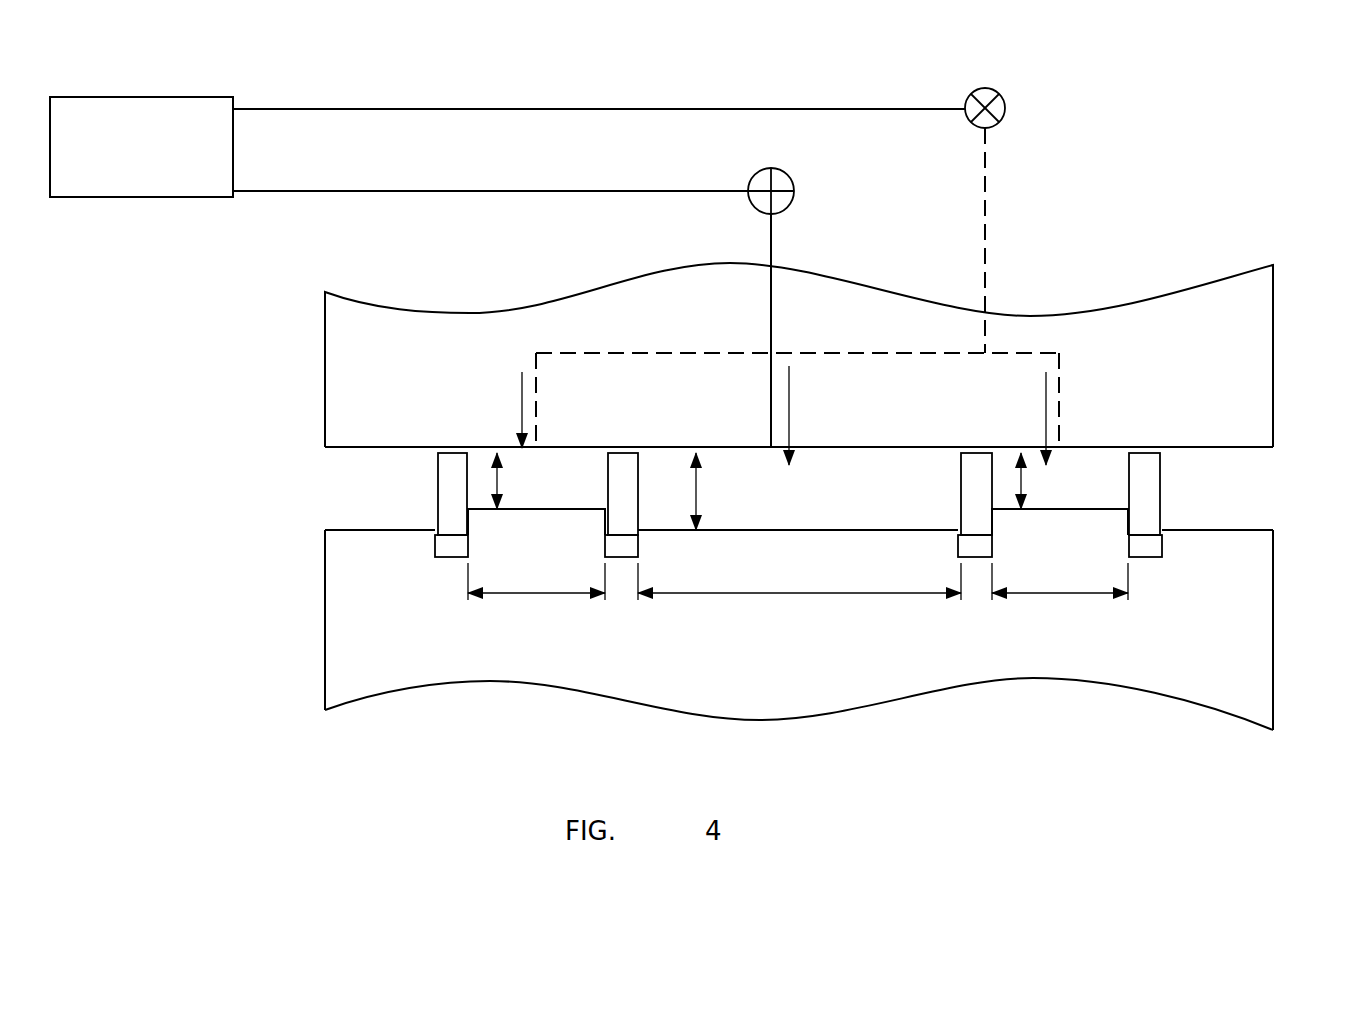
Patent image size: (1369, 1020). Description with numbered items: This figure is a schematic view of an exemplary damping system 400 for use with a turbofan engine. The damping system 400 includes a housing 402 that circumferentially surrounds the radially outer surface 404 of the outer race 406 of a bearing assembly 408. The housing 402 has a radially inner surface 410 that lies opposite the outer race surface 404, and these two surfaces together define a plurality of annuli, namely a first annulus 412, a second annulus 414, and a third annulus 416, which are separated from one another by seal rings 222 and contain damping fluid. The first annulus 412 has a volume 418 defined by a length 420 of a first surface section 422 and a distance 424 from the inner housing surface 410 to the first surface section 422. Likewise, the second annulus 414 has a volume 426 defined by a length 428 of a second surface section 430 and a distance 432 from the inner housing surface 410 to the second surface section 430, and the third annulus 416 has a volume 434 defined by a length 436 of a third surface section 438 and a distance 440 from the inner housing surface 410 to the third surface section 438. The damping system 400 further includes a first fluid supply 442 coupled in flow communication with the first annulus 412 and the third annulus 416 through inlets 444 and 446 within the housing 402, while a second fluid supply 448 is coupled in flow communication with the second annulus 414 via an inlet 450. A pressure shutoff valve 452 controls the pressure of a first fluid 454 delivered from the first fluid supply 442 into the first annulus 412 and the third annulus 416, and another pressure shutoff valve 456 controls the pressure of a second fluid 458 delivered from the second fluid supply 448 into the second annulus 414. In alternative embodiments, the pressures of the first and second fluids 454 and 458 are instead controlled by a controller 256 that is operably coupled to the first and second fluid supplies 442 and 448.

The controller 256 is at (170, 157).
The damping system 400 is at (1203, 168).
The housing 402 is at (1274, 290).
The radially outer surface 404 is at (1262, 534).
The outer race 406 is at (1273, 660).
The bearing assembly 408 is at (1037, 690).
The radially inner surface 410 is at (1262, 450).
The first annulus 412 is at (600, 450).
The second annulus 414 is at (865, 540).
The third annulus 416 is at (1117, 450).
The volume 418 is at (580, 497).
The length 420 is at (528, 597).
The first surface section 422 is at (512, 505).
The distance 424 is at (496, 480).
The volume 426 is at (902, 497).
The length 428 is at (790, 598).
The second surface section 430 is at (758, 530).
The distance 432 is at (697, 490).
The volume 434 is at (1124, 497).
The length 436 is at (1050, 597).
The third surface section 438 is at (1030, 505).
The distance 440 is at (1018, 480).
The first fluid supply 442 is at (1000, 90).
The inlet 444 is at (536, 357).
The inlet 446 is at (1060, 392).
The second fluid supply 448 is at (786, 174).
The inlet 450 is at (773, 250).
The pressure shutoff valve 452 is at (1006, 108).
The first fluid 454 is at (521, 403).
The pressure shutoff valve 456 is at (795, 191).
The second fluid 458 is at (790, 412).
The seal rings 222 is at (436, 490).